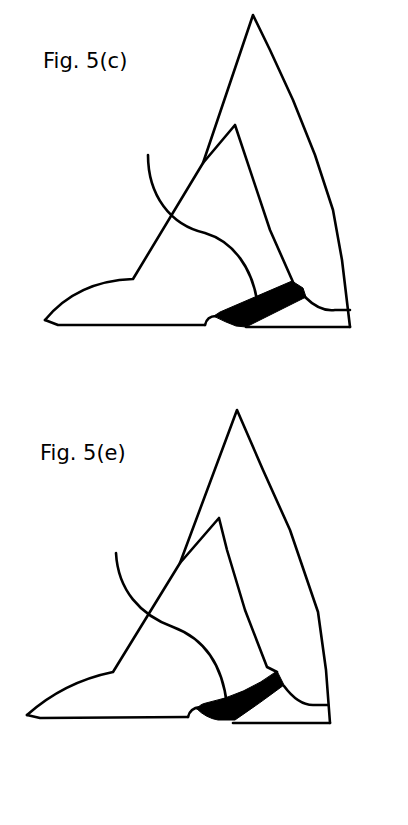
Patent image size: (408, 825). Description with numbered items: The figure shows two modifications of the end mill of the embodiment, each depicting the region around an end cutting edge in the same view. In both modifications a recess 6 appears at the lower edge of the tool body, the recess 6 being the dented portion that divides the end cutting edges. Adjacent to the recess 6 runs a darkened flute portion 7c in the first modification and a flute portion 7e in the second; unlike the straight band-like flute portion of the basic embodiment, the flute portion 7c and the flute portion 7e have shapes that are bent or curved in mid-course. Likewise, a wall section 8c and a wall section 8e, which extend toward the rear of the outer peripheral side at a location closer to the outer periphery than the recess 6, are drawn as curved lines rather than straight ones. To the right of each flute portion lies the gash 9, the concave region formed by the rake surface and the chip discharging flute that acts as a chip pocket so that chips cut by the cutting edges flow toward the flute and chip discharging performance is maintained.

In FIG. 5C, the recess 6 is at (222, 320).
In FIG. 5E, the recess 6 is at (202, 722).
In FIG. 5C, the flute portion 7c is at (252, 333).
In FIG. 5E, the flute portion 7e is at (237, 726).
In FIG. 5C, the wall section 8c is at (193, 210).
In FIG. 5E, the wall section 8e is at (163, 611).
In FIG. 5C, the gash 9 is at (303, 305).
In FIG. 5E, the gash 9 is at (293, 708).